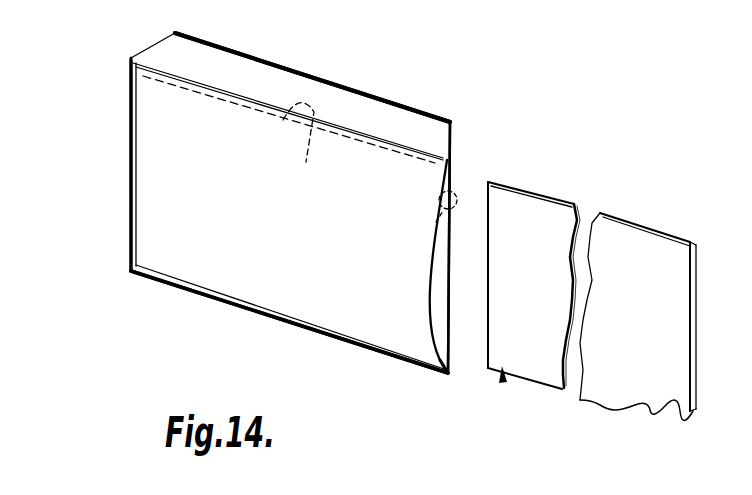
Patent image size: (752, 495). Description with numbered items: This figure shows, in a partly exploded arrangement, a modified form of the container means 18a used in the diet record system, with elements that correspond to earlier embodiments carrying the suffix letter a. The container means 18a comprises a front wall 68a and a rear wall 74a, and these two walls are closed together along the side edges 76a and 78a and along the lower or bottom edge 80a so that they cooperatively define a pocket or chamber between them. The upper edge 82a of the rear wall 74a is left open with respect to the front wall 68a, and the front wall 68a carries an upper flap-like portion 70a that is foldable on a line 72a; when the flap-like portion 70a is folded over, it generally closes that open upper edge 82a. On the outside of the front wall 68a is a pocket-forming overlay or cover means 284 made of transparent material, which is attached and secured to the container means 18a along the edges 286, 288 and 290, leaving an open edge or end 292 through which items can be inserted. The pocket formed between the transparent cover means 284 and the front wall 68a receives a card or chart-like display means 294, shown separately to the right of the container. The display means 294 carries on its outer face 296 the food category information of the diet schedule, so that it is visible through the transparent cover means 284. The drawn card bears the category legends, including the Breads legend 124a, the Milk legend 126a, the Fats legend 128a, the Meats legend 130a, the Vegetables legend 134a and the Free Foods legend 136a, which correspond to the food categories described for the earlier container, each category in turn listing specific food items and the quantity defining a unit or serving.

The container means 18a is at (430, 91).
The edge 286 is at (255, 98).
The fold line 72a is at (366, 120).
The flap-like portion 70a is at (445, 132).
The side edge 76a is at (128, 142).
The upper edge 82a is at (289, 135).
The rear wall 74a is at (436, 203).
The edge 288 is at (129, 220).
The cover means 284 is at (343, 239).
The front wall 68a is at (439, 267).
The open edge 292 is at (431, 314).
The bottom edge 80a is at (207, 298).
The edge 290 is at (308, 326).
The side edge 78a is at (452, 337).
The Breads legend 124a is at (487, 176).
The display means 294 is at (570, 202).
The Milk legend 126a is at (537, 230).
The Fats legend 128a is at (537, 254).
The Meats legend 130a is at (542, 314).
The Vegetables legend 134a is at (488, 337).
The Free Foods legend 136a is at (504, 381).
The outer face 296 is at (598, 392).